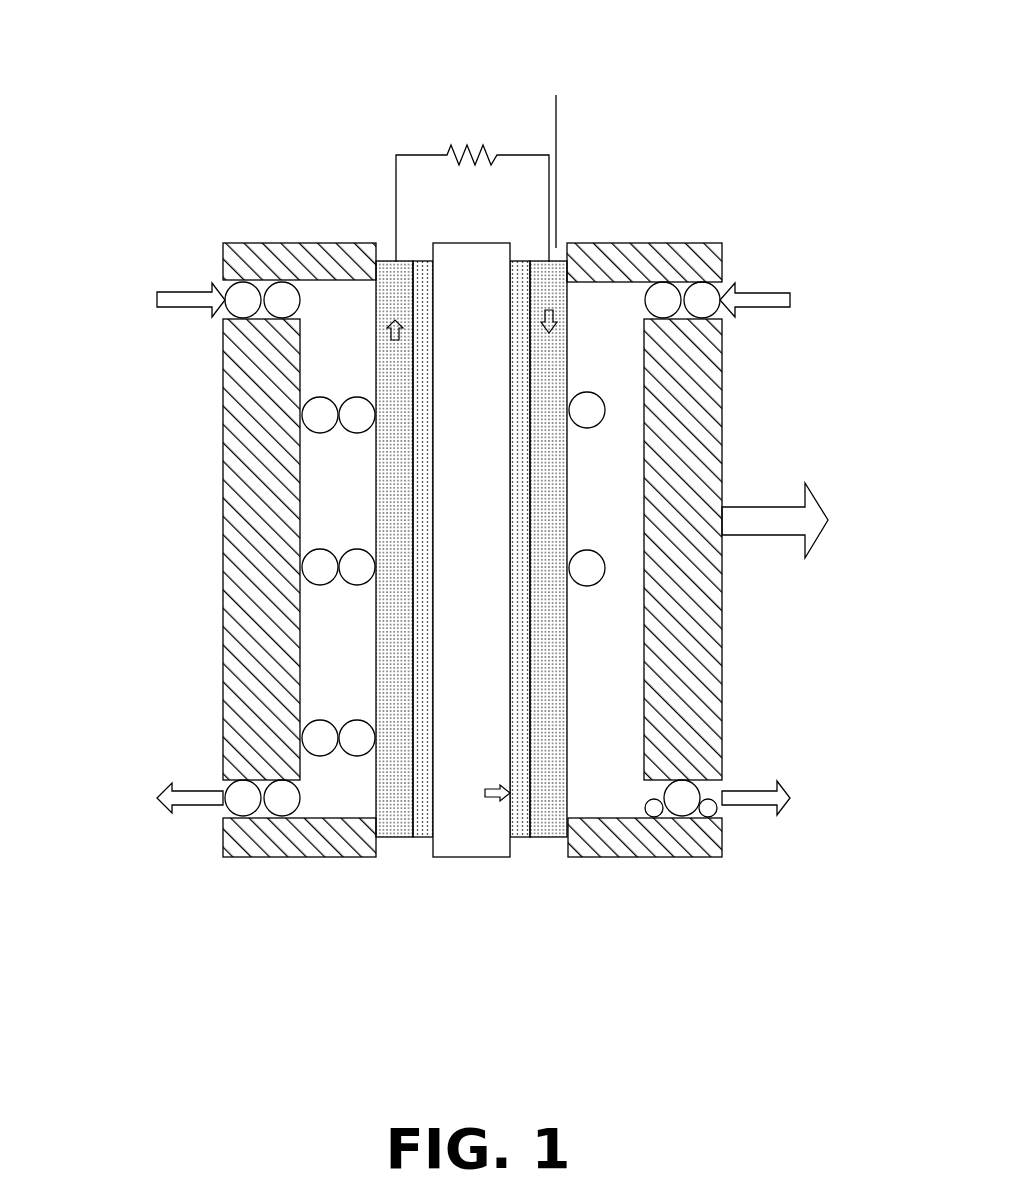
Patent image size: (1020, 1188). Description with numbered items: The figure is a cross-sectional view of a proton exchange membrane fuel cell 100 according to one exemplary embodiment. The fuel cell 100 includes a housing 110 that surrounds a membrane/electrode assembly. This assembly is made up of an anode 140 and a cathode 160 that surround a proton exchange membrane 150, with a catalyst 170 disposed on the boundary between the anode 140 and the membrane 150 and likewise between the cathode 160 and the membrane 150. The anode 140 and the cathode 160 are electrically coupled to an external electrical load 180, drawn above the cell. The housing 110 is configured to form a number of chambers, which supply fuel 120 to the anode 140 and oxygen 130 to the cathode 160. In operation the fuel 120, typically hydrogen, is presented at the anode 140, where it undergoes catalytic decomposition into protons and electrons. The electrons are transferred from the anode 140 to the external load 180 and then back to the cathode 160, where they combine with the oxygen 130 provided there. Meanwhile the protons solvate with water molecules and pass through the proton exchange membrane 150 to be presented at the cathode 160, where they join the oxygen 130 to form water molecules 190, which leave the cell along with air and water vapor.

The proton exchange membrane fuel cell 100 is at (158, 548).
The housing 110 is at (287, 245).
The fuel 120 is at (242, 300).
The oxygen 130 is at (702, 300).
The anode 140 is at (396, 820).
The proton exchange membrane 150 is at (475, 820).
The cathode 160 is at (551, 823).
The catalyst 170 is at (425, 820).
The electrical load 180 is at (475, 113).
The water molecules 190 is at (718, 810).